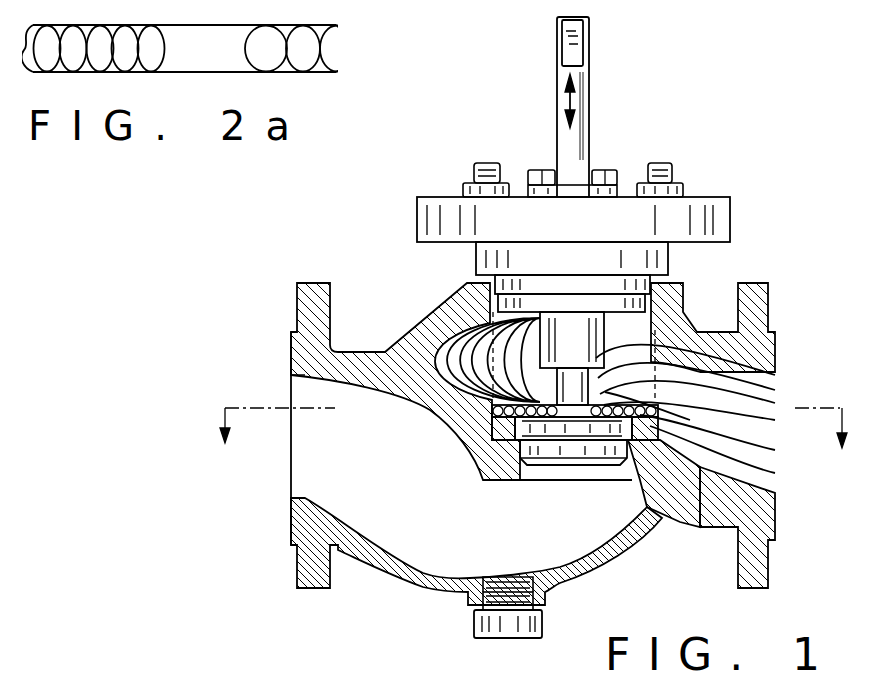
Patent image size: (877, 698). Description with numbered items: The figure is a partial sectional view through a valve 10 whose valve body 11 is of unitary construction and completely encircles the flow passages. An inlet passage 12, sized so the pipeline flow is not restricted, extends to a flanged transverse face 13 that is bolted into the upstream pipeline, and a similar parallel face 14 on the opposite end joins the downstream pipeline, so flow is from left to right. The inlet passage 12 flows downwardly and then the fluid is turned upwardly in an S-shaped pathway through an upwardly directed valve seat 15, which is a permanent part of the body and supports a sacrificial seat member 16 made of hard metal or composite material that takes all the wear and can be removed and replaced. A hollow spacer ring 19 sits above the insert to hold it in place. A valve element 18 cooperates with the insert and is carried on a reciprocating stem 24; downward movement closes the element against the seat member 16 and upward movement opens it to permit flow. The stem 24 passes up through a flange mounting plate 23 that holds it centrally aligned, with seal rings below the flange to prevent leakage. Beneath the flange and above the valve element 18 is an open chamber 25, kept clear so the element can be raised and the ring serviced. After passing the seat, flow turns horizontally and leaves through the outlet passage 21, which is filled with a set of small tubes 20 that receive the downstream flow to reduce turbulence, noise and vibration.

The valve 10 is at (380, 266).
The valve body 11 is at (422, 588).
The inlet passage 12 is at (405, 392).
The flanged transverse face 13 is at (291, 355).
The downstream face 14 is at (775, 352).
The valve seat 15 is at (650, 503).
The seat member 16 is at (692, 460).
The valve element 18 is at (573, 430).
The hollow spacer ring 19 is at (492, 416).
The tubes 20 is at (760, 397).
The outlet passage 21 is at (733, 480).
The flange mounting plate 23 is at (712, 220).
The stem 24 is at (576, 133).
The chamber 25 is at (635, 342).